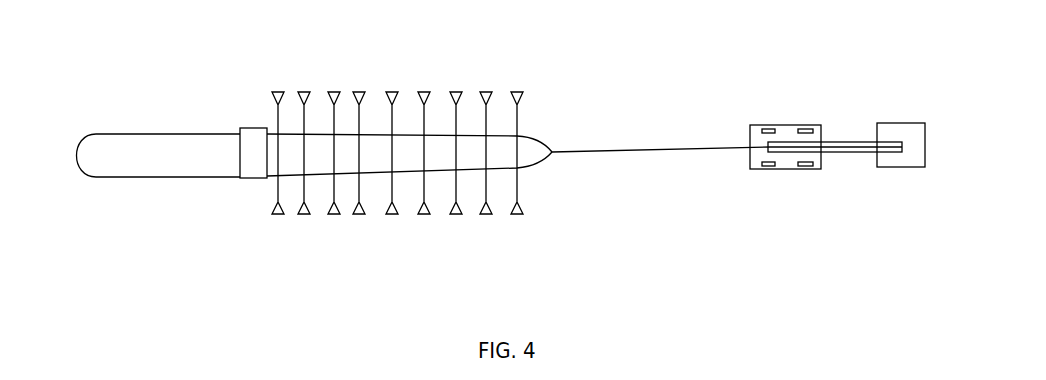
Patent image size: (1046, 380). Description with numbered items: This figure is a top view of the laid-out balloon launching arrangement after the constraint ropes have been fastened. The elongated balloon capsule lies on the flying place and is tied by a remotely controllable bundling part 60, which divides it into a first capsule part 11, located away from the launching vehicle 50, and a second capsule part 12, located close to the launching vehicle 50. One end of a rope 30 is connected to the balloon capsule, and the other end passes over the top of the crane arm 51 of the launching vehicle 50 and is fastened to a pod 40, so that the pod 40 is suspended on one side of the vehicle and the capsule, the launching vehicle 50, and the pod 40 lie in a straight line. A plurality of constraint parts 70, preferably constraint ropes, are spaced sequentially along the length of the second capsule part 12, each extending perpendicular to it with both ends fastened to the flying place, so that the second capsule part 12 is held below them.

The first capsule part 11 is at (150, 160).
The second capsule part 12 is at (437, 163).
The rope 30 is at (645, 147).
The pod 40 is at (912, 155).
The launching vehicle 50 is at (785, 123).
The crane arm 51 is at (852, 152).
The bundling part 60 is at (252, 163).
The constraint part 70 is at (357, 137).